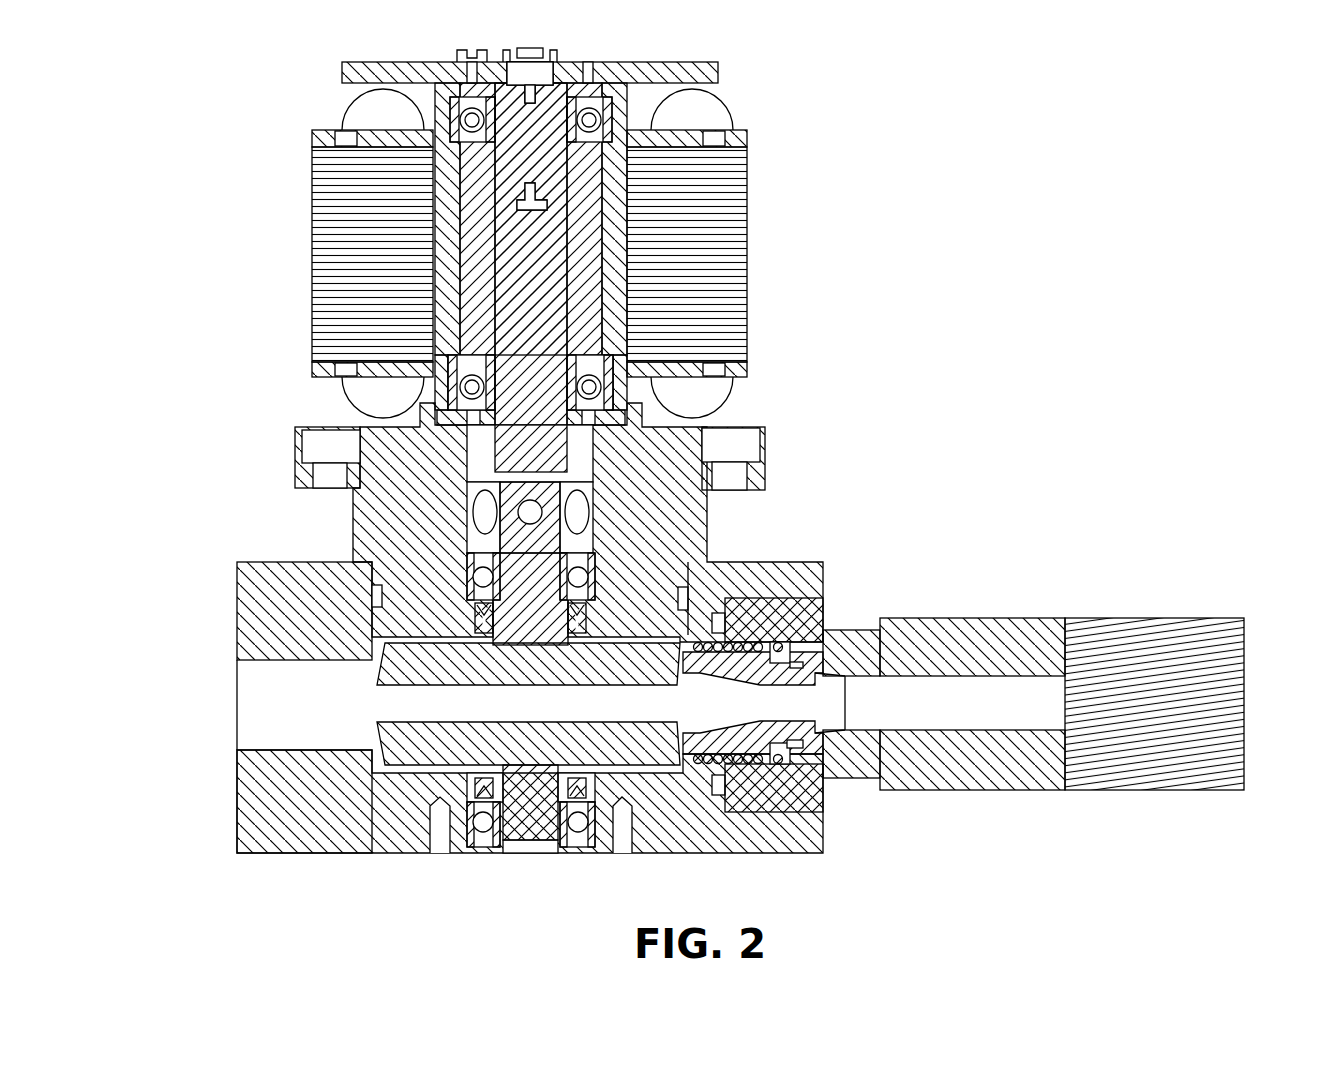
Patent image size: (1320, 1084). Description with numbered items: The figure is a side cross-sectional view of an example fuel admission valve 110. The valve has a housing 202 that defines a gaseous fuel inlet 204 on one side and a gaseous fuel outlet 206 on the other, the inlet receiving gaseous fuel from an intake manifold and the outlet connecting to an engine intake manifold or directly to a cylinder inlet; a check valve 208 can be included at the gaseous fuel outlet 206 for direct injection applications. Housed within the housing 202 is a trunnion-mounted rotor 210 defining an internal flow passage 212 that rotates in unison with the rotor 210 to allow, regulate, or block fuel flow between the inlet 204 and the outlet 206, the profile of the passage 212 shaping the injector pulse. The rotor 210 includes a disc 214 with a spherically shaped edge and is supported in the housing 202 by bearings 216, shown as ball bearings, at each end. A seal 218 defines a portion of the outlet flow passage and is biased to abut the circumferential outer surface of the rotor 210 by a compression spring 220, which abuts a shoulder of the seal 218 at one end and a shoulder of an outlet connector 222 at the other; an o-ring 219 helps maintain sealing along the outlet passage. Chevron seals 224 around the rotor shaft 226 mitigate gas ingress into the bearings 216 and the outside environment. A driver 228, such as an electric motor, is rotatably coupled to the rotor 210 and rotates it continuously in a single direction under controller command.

The fuel admission valve 110 is at (1192, 137).
The housing 202 is at (253, 516).
The gaseous fuel inlet 204 is at (247, 676).
The gaseous fuel outlet 206 is at (1065, 635).
The check valve 208 is at (1156, 618).
The rotor 210 is at (357, 777).
The internal flow passage 212 is at (390, 703).
The disc 214 is at (645, 758).
The bearings 216 is at (592, 577).
The seal 218 is at (762, 668).
The o-ring 219 is at (793, 750).
The compression spring 220 is at (738, 640).
The outlet connector 222 is at (940, 618).
The chevron seals 224 is at (607, 610).
The rotor shaft 226 is at (557, 527).
The driver 228 is at (243, 222).